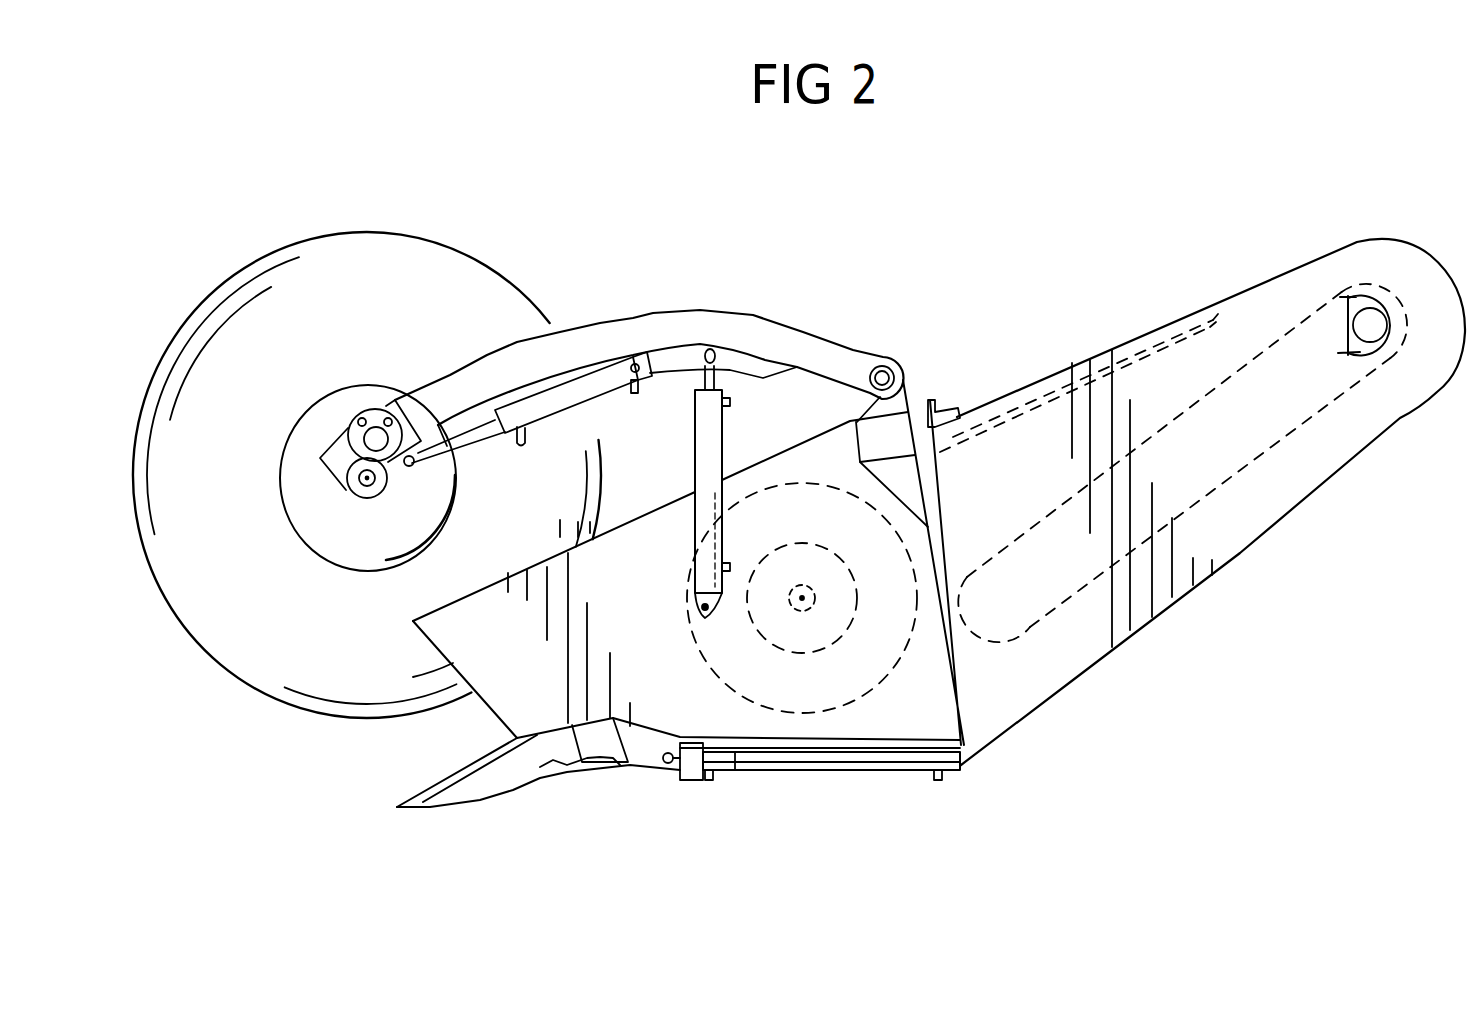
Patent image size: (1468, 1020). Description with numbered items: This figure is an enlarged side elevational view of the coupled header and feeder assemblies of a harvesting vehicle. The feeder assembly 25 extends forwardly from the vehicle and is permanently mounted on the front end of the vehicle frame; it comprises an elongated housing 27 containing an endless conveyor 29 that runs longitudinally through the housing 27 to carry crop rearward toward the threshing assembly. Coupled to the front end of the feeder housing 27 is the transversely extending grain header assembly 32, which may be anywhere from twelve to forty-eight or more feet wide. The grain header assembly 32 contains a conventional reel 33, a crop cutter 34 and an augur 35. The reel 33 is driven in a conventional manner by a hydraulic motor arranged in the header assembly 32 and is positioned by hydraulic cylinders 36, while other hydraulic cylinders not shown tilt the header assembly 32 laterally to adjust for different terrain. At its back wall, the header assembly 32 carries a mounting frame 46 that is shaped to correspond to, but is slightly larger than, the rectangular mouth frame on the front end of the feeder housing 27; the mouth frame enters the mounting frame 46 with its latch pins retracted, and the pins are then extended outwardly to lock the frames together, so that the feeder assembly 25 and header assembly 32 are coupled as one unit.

The feeder assembly 25 is at (1188, 268).
The elongated housing 27 is at (1070, 685).
The endless conveyor 29 is at (1250, 468).
The grain header assembly 32 is at (670, 791).
The reel 33 is at (408, 263).
The crop cutter 34 is at (482, 775).
The augur 35 is at (805, 690).
The hydraulic cylinders 36 is at (693, 440).
The mounting frame 46 is at (940, 450).